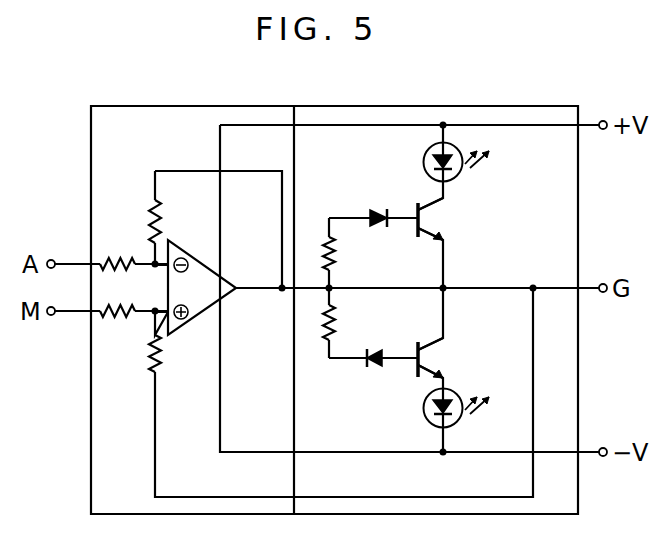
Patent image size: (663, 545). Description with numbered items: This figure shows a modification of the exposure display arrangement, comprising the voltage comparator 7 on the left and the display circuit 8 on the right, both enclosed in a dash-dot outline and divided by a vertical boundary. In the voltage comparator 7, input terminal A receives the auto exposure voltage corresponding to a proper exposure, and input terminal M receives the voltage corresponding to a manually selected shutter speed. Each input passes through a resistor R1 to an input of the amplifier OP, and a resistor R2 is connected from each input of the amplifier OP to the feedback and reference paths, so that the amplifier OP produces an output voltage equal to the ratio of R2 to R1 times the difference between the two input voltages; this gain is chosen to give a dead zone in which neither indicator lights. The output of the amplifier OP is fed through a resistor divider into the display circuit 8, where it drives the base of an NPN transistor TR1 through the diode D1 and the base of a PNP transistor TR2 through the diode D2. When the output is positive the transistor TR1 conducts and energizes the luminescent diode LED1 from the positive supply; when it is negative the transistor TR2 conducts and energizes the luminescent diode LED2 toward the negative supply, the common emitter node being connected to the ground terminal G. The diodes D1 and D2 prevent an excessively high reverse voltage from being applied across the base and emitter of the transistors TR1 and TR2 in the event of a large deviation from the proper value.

The voltage comparator 7 is at (217, 105).
The display circuit 8 is at (462, 105).
The amplifier OP is at (202, 287).
The input resistor R1 is at (118, 258).
The feedback resistor R2 is at (168, 208).
The diode D1 is at (380, 210).
The diode D2 is at (377, 354).
The NPN transistor TR1 is at (438, 232).
The PNP transistor TR2 is at (440, 350).
The luminescent diode LED1 is at (456, 176).
The luminescent diode LED2 is at (459, 421).